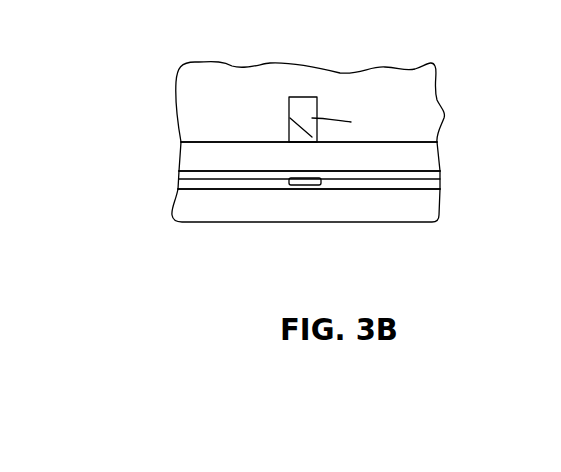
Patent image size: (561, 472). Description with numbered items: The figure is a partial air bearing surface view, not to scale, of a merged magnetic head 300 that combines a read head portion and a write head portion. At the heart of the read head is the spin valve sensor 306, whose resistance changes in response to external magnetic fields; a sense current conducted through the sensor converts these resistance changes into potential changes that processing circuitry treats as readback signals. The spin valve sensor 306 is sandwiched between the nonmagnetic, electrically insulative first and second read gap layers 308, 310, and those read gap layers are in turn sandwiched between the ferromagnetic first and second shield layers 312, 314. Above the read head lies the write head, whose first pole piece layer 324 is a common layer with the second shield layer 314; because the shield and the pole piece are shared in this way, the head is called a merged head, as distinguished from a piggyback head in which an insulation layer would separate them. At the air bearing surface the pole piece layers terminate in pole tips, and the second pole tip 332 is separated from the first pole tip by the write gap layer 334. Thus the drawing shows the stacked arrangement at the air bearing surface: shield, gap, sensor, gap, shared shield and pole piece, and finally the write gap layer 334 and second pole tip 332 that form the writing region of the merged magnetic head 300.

The merged magnetic head 300 is at (458, 76).
The spin valve sensor 306 is at (306, 185).
The first read gap layer 308 is at (228, 190).
The second read gap layer 310 is at (405, 175).
The first shield layer 312 is at (427, 207).
The second shield layer 314 is at (182, 153).
The first pole piece layer 324 is at (182, 153).
The second pole tip 332 is at (307, 112).
The write gap layer 334 is at (290, 118).